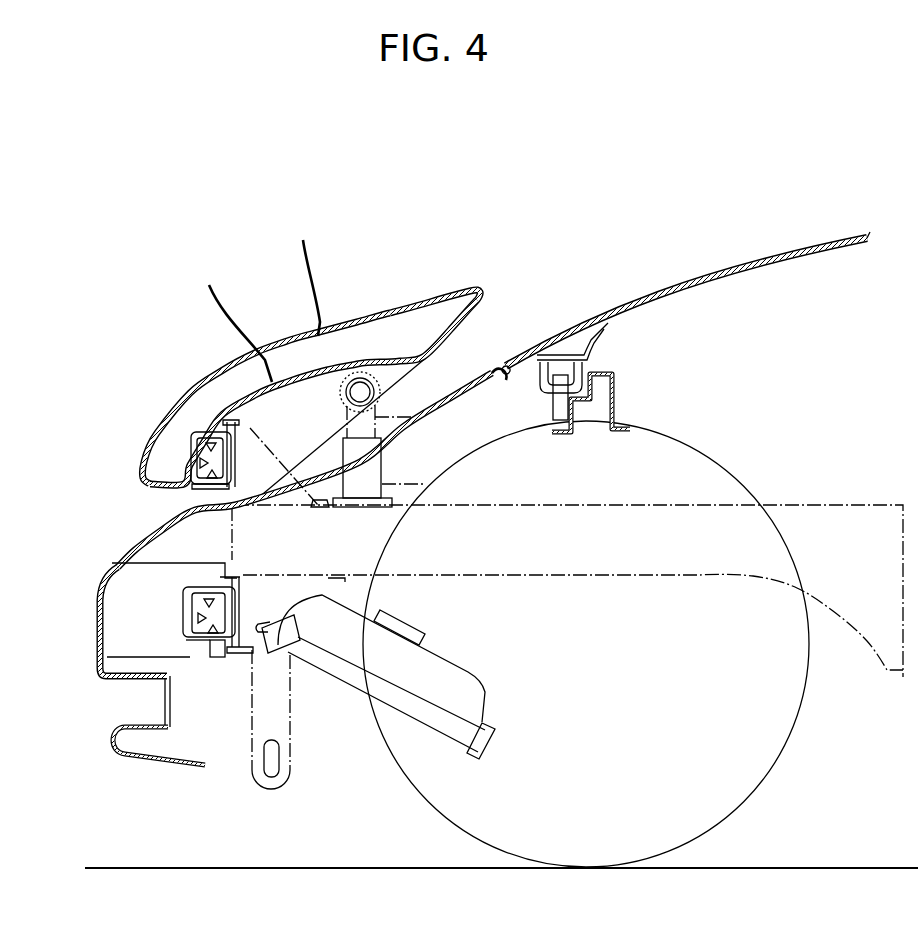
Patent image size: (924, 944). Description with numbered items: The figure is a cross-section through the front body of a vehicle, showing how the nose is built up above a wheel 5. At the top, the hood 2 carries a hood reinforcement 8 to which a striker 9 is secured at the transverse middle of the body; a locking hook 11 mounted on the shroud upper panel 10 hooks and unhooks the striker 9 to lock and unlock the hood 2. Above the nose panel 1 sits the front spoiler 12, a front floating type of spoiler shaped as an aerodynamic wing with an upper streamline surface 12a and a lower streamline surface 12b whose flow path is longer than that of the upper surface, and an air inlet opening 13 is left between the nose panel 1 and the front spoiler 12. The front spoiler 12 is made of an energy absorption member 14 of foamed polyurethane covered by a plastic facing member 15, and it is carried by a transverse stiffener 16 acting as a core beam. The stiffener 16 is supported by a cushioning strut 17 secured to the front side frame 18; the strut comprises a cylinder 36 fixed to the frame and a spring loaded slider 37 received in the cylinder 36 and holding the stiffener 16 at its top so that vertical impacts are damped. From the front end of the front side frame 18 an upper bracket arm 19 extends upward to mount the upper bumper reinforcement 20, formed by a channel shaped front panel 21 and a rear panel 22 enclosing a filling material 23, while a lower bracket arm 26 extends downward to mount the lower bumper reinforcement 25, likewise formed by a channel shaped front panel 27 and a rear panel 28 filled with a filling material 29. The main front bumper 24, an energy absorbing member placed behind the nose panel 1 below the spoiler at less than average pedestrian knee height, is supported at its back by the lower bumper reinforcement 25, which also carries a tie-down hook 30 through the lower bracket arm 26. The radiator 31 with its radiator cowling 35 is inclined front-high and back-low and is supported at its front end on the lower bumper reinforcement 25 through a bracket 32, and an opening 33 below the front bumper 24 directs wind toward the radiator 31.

The nose panel 1 is at (113, 560).
The hood 2 is at (711, 275).
The wheel 5 is at (782, 763).
The hood reinforcement 8 is at (600, 328).
The striker 9 is at (547, 384).
The shroud upper panel 10 is at (614, 395).
The locking hook 11 is at (553, 410).
The front spoiler 12 is at (282, 348).
The upper streamline surface 12a is at (307, 274).
The lower streamline surface 12b is at (223, 319).
The air inlet opening 13 is at (156, 507).
The energy absorption member 14 is at (350, 336).
The plastic facing member 15 is at (413, 304).
The stiffener 16 is at (380, 388).
The cushioning strut 17 is at (392, 459).
The front side frame 18 is at (600, 578).
The upper bracket arm 19 is at (284, 455).
The upper bumper reinforcement 20 is at (208, 492).
The channel shaped front panel 21 is at (189, 467).
The rear panel 22 is at (233, 452).
The filling material 23 is at (218, 435).
The main front bumper 24 is at (123, 637).
The lower bumper reinforcement 25 is at (213, 650).
The lower bracket arm 26 is at (345, 592).
The channel shaped front panel 27 is at (183, 608).
The rear panel 28 is at (240, 580).
The filling material 29 is at (202, 636).
The tie-down hook 30 is at (290, 712).
The radiator 31 is at (483, 740).
The bracket 32 is at (246, 626).
The opening 33 is at (165, 702).
The radiator cowling 35 is at (470, 683).
The cylinder 36 is at (428, 485).
The spring loaded slider 37 is at (412, 417).